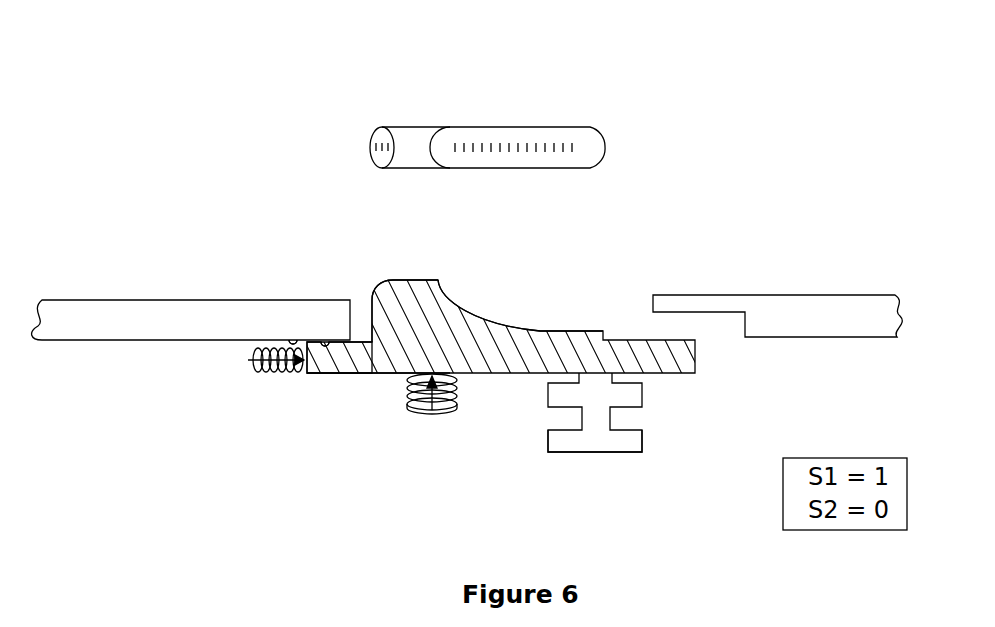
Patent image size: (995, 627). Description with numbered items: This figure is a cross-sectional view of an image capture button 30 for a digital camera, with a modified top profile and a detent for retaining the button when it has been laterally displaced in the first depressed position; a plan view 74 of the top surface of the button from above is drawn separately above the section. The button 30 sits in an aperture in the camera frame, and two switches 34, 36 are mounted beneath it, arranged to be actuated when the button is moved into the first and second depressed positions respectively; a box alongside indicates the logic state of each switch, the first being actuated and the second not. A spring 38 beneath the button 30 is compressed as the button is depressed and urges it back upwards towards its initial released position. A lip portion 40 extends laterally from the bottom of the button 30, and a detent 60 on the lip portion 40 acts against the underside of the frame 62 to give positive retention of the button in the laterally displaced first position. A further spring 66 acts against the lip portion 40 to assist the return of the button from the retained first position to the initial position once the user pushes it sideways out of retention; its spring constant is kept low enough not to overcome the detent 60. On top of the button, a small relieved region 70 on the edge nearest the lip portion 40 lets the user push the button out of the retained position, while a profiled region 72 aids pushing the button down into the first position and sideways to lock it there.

The image capture button 30 is at (445, 322).
The first switch 34 is at (645, 393).
The second switch 36 is at (645, 442).
The spring 38 is at (445, 413).
The lip portion 40 is at (355, 355).
The detent 60 is at (330, 347).
The underside of the frame 62 is at (292, 338).
The spring 66 is at (283, 378).
The relieved region 70 is at (386, 290).
The profiled region 72 is at (520, 320).
The plan view 74 is at (488, 115).